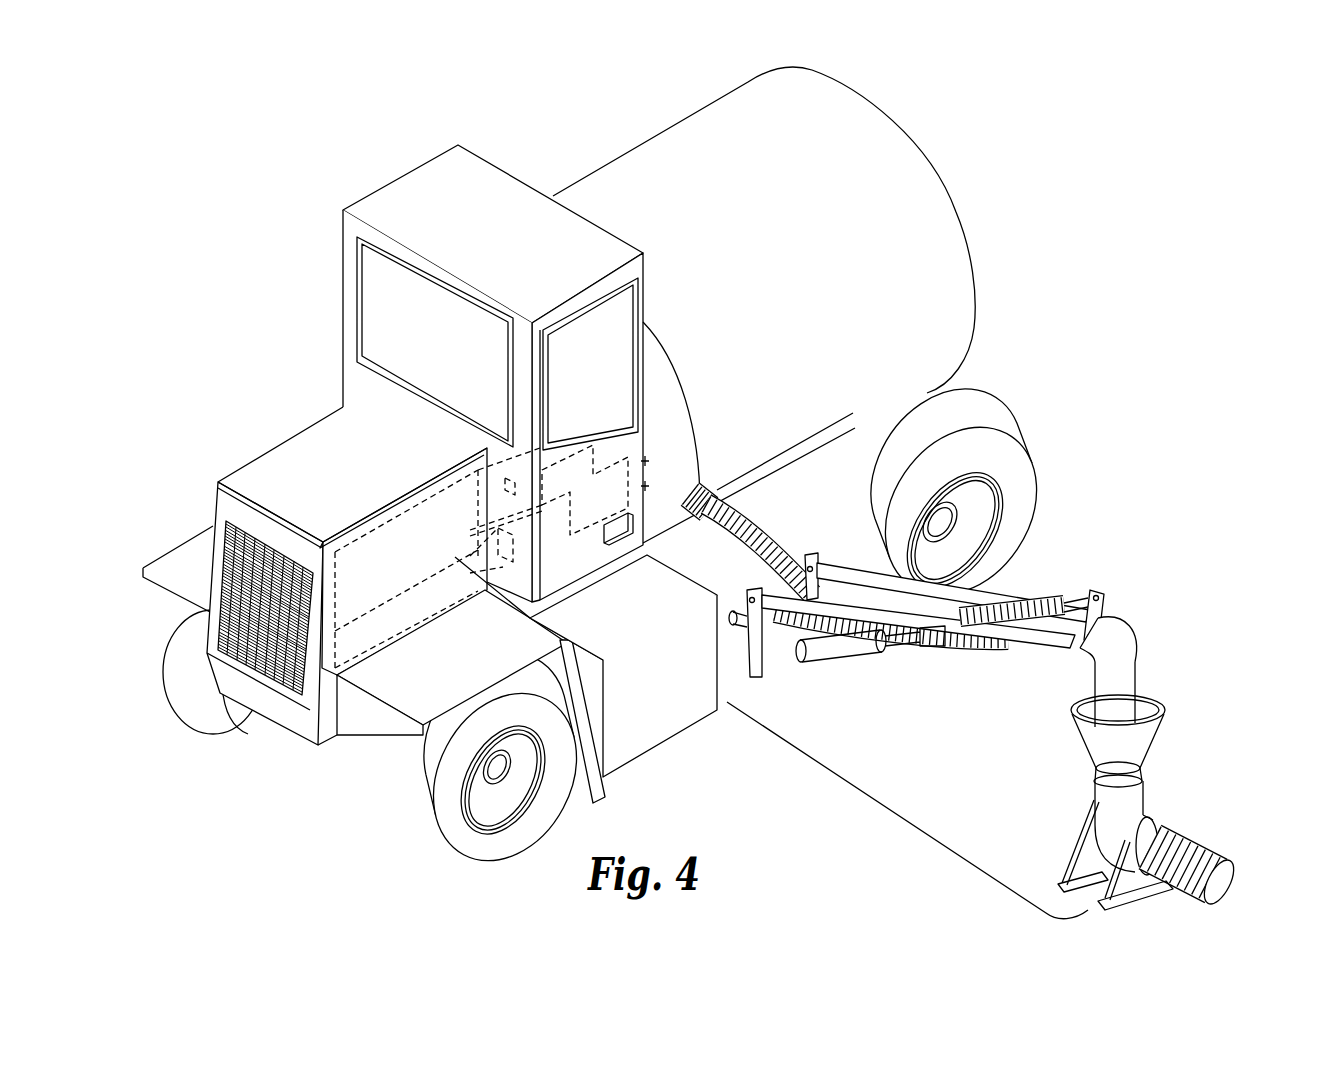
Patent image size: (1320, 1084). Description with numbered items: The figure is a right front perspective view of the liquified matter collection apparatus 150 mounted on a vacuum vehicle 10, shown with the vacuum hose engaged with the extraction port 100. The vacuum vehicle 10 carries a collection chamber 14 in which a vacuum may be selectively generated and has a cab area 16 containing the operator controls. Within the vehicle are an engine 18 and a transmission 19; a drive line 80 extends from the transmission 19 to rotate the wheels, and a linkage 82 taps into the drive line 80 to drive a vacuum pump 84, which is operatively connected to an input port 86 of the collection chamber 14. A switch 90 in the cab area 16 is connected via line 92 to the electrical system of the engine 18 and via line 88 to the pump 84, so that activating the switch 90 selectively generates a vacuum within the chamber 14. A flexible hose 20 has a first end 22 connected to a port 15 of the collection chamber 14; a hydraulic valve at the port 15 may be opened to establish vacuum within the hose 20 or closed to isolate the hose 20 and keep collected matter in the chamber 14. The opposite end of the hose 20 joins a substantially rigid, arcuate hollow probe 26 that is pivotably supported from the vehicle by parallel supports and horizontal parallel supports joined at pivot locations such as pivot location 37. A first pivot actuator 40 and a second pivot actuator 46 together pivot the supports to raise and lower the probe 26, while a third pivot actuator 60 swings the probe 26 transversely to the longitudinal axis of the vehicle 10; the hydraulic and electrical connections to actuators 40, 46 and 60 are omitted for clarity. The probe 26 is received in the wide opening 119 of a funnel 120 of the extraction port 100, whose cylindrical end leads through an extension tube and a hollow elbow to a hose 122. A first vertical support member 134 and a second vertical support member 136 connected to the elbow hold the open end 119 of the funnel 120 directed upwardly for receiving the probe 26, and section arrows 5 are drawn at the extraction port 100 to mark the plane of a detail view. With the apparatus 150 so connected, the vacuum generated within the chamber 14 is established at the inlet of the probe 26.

The vacuum vehicle 10 is at (270, 319).
The collection chamber 14 is at (948, 178).
The port 15 is at (712, 493).
The cab area 16 is at (622, 439).
The engine 18 is at (381, 576).
The transmission 19 is at (381, 629).
The hose 20 is at (1027, 600).
The first end 22 is at (718, 482).
The probe 26 is at (1137, 675).
The pivot location 37 is at (807, 555).
The first pivot actuator 40 is at (718, 640).
The second pivot actuator 46 is at (845, 665).
The third pivot actuator 60 is at (1055, 612).
The drive line 80 is at (488, 590).
The linkage 82 is at (504, 530).
The vacuum pump 84 is at (595, 523).
The input port 86 is at (638, 468).
The line 88 is at (660, 366).
The switch 90 is at (508, 479).
The line 92 is at (489, 495).
The extraction port 100 is at (1184, 786).
The wide opening 119 is at (1083, 707).
The funnel 120 is at (1153, 747).
The hose 122 is at (1217, 860).
The first vertical support member 134 is at (1077, 830).
The second vertical support member 136 is at (1130, 877).
The liquified matter collection apparatus 150 is at (913, 842).
The section line 5 is at (1140, 693).